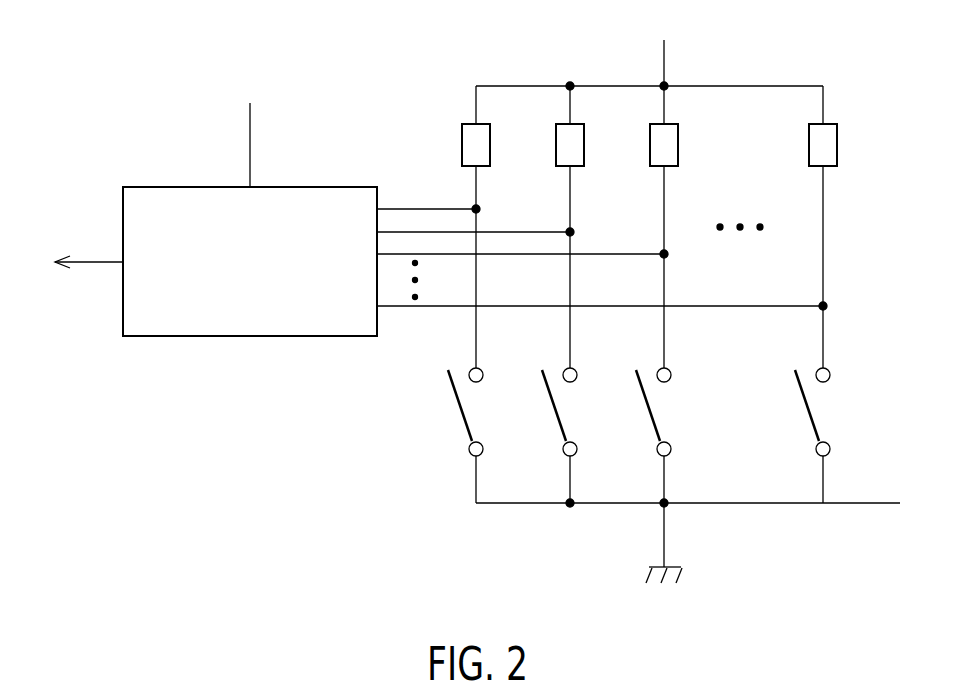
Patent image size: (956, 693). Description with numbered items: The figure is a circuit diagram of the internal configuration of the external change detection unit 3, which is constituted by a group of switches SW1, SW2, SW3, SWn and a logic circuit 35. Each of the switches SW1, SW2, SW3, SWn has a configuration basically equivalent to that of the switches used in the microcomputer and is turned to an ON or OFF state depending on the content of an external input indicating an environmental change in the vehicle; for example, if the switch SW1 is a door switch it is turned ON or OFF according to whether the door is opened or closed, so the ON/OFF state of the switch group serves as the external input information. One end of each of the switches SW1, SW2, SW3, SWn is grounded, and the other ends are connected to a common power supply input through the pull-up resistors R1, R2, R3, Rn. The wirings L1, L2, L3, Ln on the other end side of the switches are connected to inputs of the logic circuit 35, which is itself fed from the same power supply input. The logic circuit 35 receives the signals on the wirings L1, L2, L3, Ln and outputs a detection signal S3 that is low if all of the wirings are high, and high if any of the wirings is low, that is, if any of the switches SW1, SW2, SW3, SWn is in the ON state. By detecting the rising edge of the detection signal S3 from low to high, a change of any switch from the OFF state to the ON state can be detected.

The external change detection unit 3 is at (428, 38).
The logic circuit 35 is at (325, 187).
The detection signal S3 is at (75, 263).
The pull-up resistor R1 is at (490, 134).
The pull-up resistor R2 is at (584, 134).
The pull-up resistor R3 is at (678, 134).
The pull-up resistor Rn is at (837, 134).
The wiring L1 is at (478, 327).
The wiring L2 is at (572, 327).
The wiring L3 is at (666, 327).
The wiring Ln is at (825, 327).
The switch SW1 is at (457, 410).
The switch SW2 is at (551, 410).
The switch SW3 is at (645, 410).
The switch SWn is at (804, 410).